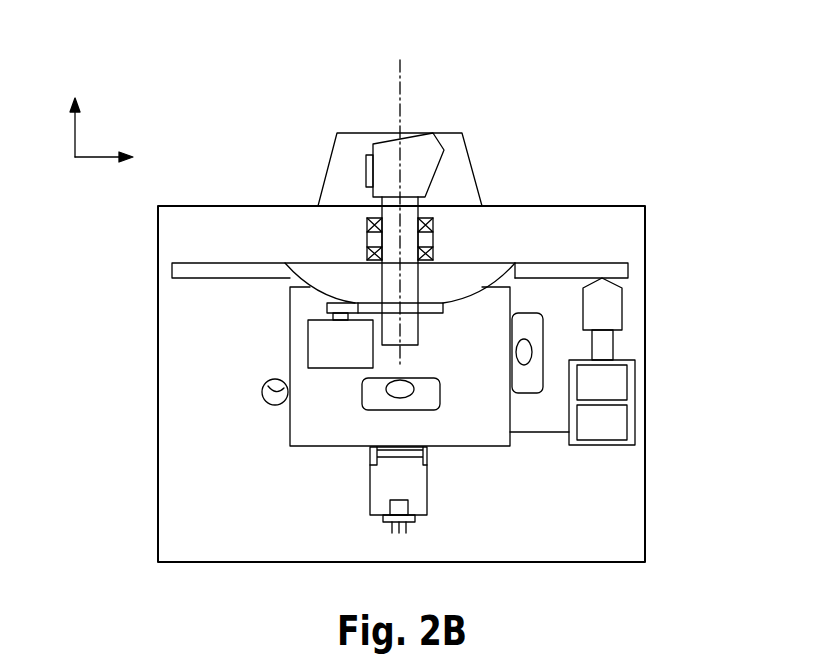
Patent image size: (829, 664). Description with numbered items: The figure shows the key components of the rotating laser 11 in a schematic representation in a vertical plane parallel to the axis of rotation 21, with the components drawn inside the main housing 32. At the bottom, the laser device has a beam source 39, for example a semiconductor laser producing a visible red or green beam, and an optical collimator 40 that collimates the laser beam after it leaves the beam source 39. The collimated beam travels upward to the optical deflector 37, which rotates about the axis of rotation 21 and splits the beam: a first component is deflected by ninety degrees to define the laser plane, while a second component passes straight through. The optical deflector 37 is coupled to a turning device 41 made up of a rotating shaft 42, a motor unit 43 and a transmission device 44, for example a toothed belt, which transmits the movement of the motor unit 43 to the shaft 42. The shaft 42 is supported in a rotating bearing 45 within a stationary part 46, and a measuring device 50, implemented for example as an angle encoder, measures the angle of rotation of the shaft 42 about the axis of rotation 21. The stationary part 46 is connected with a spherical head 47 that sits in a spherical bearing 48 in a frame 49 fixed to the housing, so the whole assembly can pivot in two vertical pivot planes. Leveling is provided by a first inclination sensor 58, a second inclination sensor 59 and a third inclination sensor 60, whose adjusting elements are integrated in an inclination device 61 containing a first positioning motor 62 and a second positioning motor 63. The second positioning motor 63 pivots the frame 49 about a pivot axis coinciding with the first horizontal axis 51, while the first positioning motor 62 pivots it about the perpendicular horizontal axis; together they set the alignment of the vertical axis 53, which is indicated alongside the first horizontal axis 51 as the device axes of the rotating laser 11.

The rotating laser 11 is at (615, 137).
The axis of rotation 21 is at (402, 78).
The main housing 32 is at (645, 343).
The optical deflector 37 is at (427, 162).
The beam source 39 is at (415, 520).
The optical collimator 40 is at (370, 458).
The turning device 41 is at (332, 376).
The rotating shaft 42 is at (408, 337).
The motor unit 43 is at (322, 345).
The transmission device 44 is at (330, 307).
The rotating bearing 45 is at (367, 240).
The stationary part 46 is at (500, 435).
The spherical head 47 is at (497, 272).
The spherical bearing 48 is at (455, 290).
The frame 49 is at (565, 272).
The measuring device 50 is at (433, 308).
The first horizontal axis 51 is at (113, 175).
The vertical axis 53 is at (56, 122).
The first inclination sensor 58 is at (410, 388).
The second inclination sensor 59 is at (276, 393).
The third inclination sensor 60 is at (522, 353).
The inclination device 61 is at (605, 458).
The first positioning motor 62 is at (620, 397).
The second positioning motor 63 is at (620, 437).